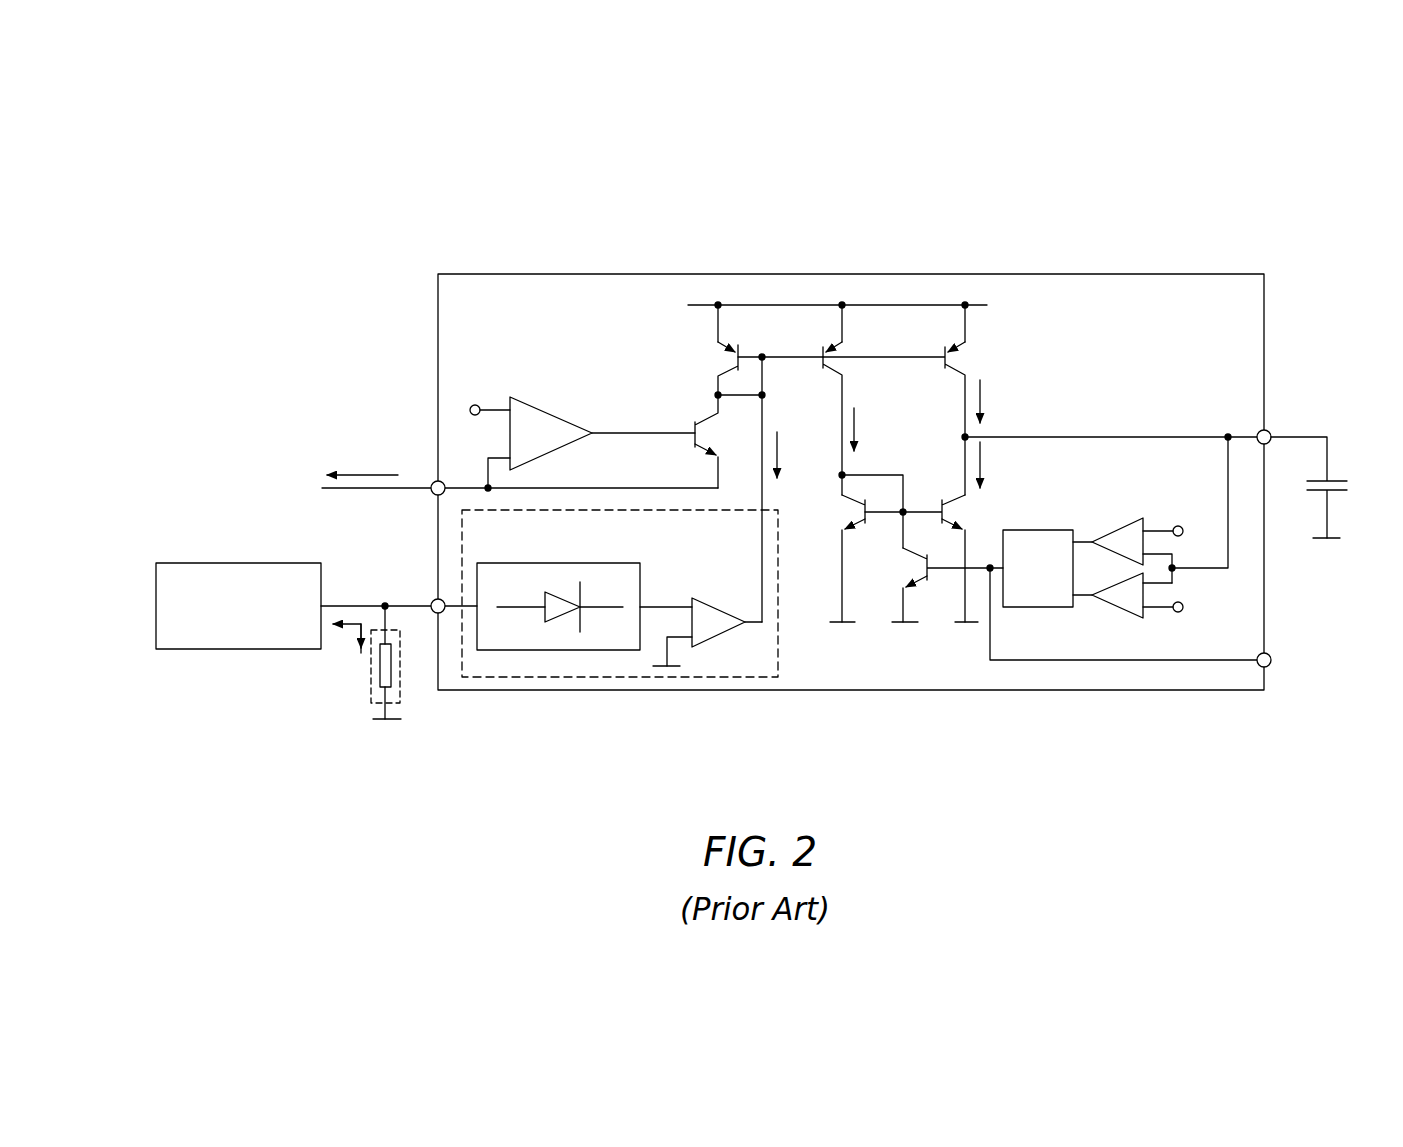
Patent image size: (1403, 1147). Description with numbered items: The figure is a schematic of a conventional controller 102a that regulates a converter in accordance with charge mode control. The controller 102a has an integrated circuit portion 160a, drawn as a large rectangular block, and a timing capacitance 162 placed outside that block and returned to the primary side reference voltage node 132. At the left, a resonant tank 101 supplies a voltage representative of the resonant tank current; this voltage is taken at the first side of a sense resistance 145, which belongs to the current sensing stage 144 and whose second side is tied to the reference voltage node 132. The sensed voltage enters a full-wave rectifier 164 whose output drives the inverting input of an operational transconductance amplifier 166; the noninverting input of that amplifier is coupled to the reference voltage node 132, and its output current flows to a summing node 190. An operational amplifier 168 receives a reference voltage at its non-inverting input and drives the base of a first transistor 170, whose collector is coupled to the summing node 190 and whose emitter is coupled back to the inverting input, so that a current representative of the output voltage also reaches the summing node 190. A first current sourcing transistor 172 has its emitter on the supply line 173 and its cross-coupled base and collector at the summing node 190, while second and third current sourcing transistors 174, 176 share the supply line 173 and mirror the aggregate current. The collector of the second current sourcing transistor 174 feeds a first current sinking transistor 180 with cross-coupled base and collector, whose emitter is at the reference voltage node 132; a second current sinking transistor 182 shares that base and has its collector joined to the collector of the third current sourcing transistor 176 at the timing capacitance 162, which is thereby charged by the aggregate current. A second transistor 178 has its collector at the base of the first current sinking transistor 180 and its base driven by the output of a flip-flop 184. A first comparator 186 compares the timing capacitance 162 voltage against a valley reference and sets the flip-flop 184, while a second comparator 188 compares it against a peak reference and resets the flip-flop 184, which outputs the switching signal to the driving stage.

The resonant tank 101 is at (240, 563).
The controller 102a is at (1108, 208).
The primary side reference voltage node 132 is at (391, 721).
The current sensing stage 144 is at (370, 694).
The sense resistance 145 is at (392, 665).
The integrated circuit portion 160a is at (584, 273).
The timing capacitance 162 is at (1331, 478).
The full-wave rectifier 164 is at (560, 563).
The operational transconductance amplifier 166 is at (706, 600).
The operational amplifier 168 is at (553, 412).
The first transistor 170 is at (694, 440).
The first current sourcing transistor 172 is at (739, 348).
The supply line 173 is at (983, 307).
The second current sourcing transistor 174 is at (822, 371).
The third current sourcing transistor 176 is at (944, 348).
The second transistor 178 is at (929, 581).
The first current sinking transistor 180 is at (866, 525).
The second current sinking transistor 182 is at (941, 525).
The flip-flop 184 is at (1040, 529).
The first comparator 186 is at (1130, 519).
The second comparator 188 is at (1133, 619).
The summing node 190 is at (765, 394).